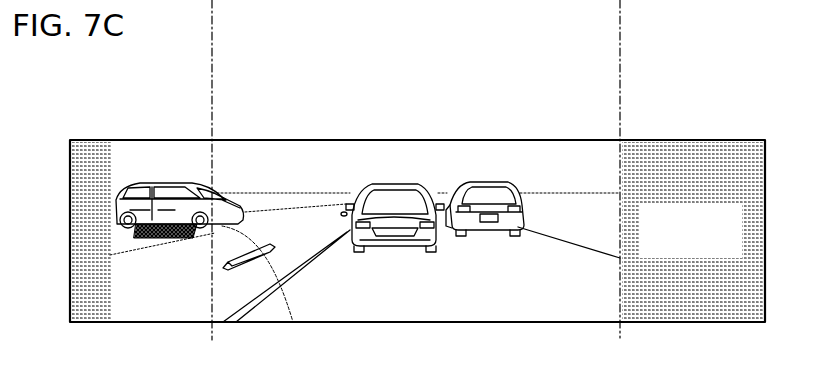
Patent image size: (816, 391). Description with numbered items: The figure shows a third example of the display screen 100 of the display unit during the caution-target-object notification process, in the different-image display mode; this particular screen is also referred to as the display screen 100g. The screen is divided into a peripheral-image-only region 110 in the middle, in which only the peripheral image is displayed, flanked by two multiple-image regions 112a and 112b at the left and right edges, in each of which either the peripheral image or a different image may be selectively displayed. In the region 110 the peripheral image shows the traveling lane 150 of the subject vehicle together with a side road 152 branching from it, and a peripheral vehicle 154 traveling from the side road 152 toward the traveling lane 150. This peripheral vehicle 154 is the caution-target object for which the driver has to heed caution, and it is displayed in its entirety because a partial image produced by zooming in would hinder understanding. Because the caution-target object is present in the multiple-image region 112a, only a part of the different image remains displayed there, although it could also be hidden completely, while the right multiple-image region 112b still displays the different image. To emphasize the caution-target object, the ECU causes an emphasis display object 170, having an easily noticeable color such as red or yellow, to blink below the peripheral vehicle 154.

The display screen 100 is at (117, 76).
The display screen 100g is at (168, 76).
The peripheral-image-only region 110 is at (620, 121).
The multiple-image region 112a is at (212, 121).
The multiple-image region 112b is at (765, 121).
The traveling lane 150 is at (403, 312).
The side road 152 is at (293, 322).
The peripheral vehicle 154 is at (125, 232).
The emphasis display object 170 is at (150, 238).